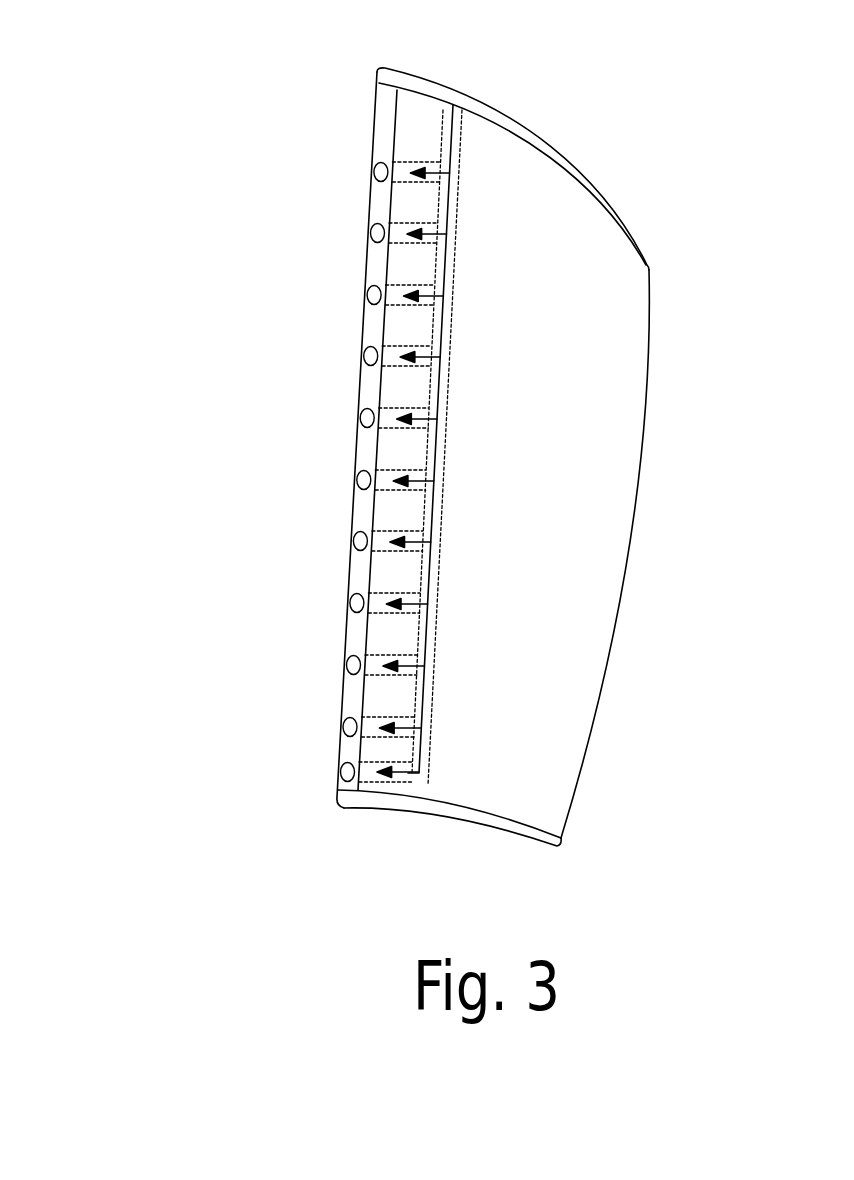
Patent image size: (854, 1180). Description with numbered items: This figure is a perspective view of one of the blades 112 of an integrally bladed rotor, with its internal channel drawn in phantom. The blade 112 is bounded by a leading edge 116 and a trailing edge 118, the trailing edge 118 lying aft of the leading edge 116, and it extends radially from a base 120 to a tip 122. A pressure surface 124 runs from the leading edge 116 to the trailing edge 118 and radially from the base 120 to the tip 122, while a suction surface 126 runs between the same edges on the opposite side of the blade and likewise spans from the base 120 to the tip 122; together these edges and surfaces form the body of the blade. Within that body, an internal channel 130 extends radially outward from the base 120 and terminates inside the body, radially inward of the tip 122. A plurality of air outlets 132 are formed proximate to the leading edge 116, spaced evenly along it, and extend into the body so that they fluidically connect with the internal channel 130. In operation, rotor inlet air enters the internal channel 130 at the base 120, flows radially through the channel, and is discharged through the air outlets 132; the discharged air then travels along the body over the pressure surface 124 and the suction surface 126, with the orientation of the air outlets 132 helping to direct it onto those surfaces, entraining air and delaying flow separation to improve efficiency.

The blade 112 is at (180, 231).
The leading edge 116 is at (362, 509).
The trailing edge 118 is at (629, 518).
The base 120 is at (494, 120).
The tip 122 is at (477, 820).
The pressure surface 124 is at (560, 585).
The suction surface 126 is at (402, 800).
The internal channel 130 is at (455, 104).
The air outlets 132 is at (362, 227).